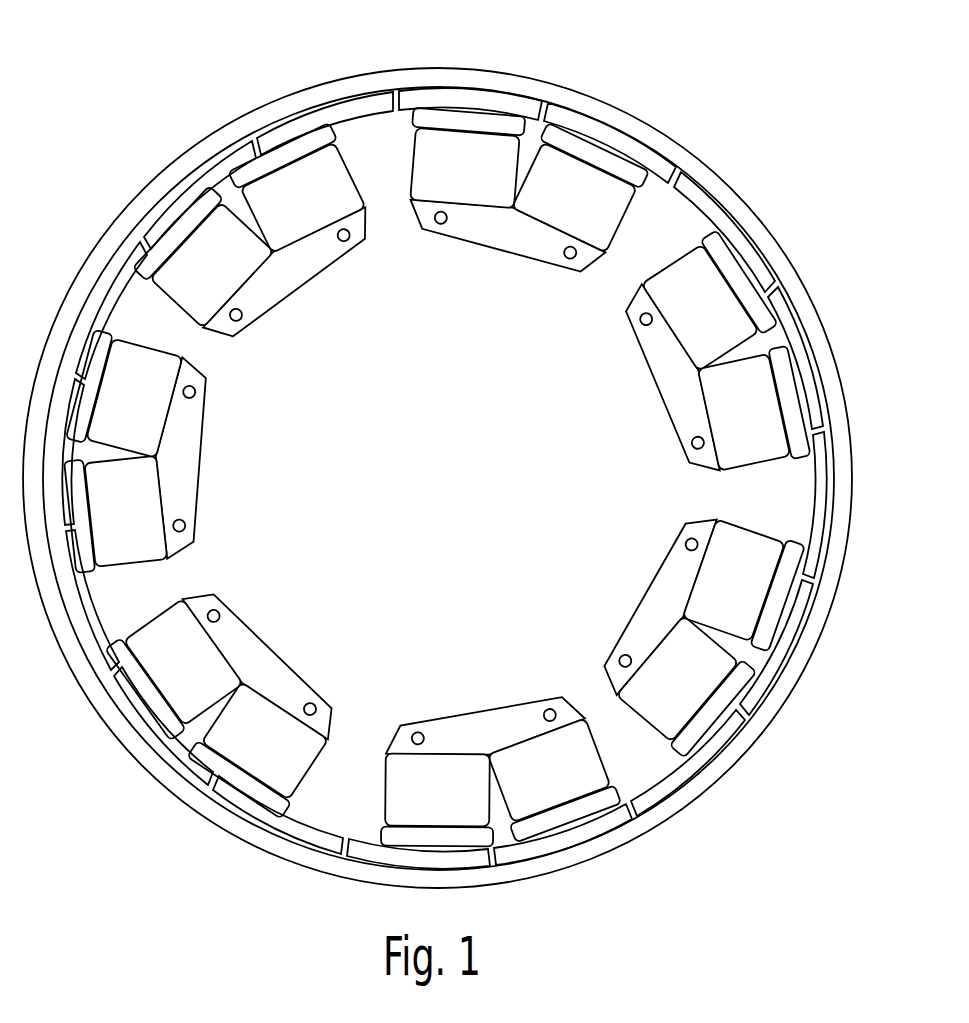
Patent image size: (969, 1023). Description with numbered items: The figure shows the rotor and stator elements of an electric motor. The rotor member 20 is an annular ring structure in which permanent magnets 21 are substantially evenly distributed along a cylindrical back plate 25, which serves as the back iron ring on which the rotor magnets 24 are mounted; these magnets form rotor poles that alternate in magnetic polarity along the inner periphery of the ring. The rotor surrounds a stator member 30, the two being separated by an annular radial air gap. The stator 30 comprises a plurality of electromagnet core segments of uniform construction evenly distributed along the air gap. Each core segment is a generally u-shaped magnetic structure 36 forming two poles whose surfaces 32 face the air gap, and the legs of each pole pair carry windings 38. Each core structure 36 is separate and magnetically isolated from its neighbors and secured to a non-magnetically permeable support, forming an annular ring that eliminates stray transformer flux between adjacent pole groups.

The rotor member 20 is at (453, 458).
The permanent magnets 21 is at (694, 177).
The rotor magnets 24 is at (537, 262).
The cylindrical back plate 25 is at (636, 118).
The stator member 30 is at (443, 447).
The pole surfaces 32 is at (444, 118).
The u-shaped magnetic structure 36 is at (458, 214).
The windings 38 is at (478, 148).